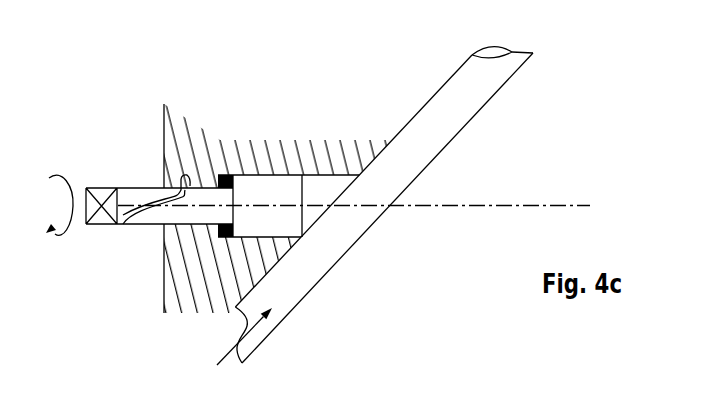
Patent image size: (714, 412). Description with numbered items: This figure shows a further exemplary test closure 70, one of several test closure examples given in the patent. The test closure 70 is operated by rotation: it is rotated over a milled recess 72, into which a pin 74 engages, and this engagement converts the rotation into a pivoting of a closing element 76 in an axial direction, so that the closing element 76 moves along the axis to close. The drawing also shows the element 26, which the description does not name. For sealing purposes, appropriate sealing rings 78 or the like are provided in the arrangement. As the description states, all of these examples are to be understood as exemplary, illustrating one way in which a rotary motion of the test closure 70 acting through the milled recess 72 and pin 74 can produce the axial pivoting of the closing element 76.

The tube 26 is at (412, 132).
The test closure 70 is at (100, 155).
The milled recess 72 is at (123, 224).
The pin 74 is at (184, 184).
The closing element 76 is at (285, 228).
The sealing rings 78 is at (233, 175).